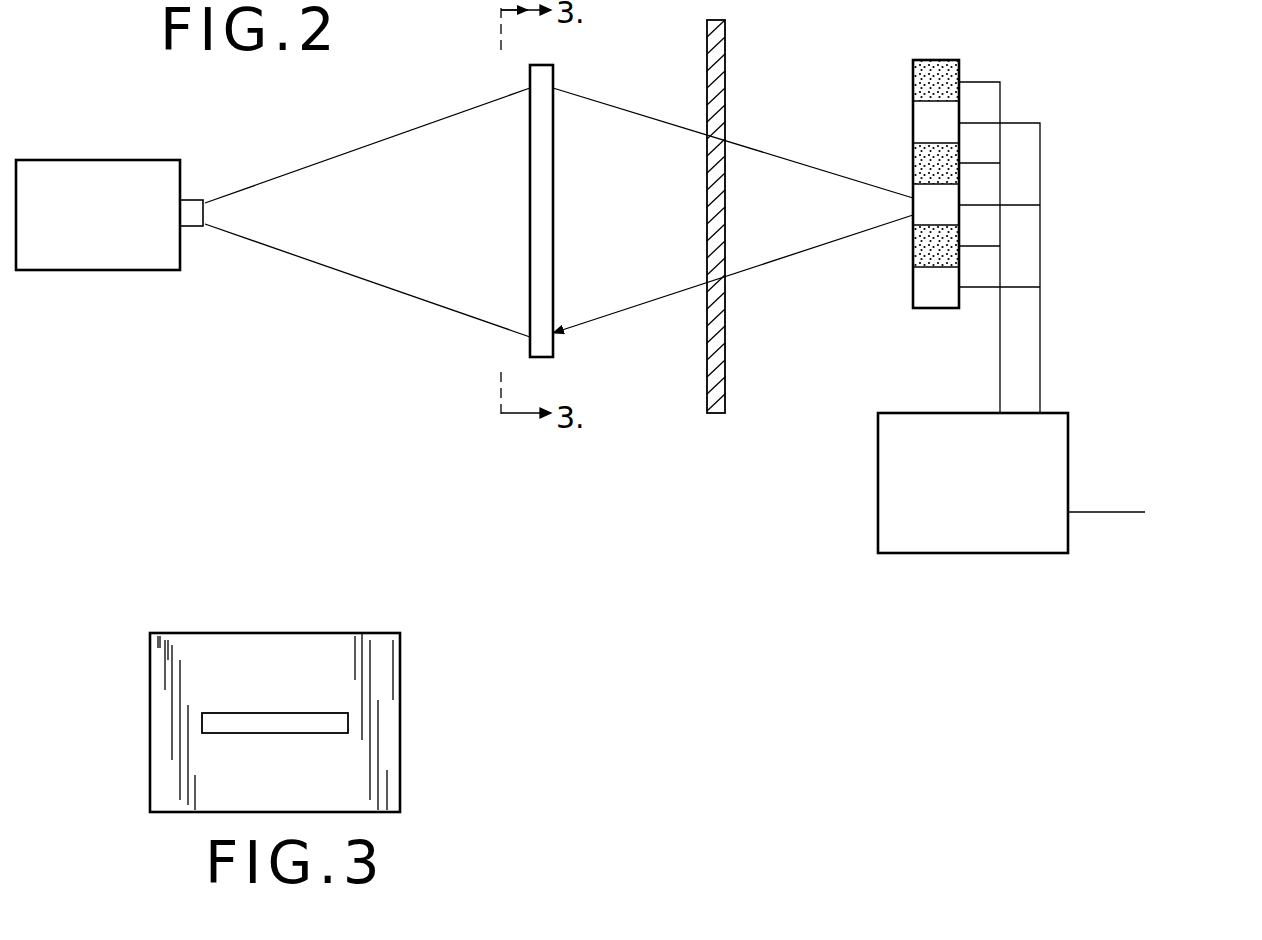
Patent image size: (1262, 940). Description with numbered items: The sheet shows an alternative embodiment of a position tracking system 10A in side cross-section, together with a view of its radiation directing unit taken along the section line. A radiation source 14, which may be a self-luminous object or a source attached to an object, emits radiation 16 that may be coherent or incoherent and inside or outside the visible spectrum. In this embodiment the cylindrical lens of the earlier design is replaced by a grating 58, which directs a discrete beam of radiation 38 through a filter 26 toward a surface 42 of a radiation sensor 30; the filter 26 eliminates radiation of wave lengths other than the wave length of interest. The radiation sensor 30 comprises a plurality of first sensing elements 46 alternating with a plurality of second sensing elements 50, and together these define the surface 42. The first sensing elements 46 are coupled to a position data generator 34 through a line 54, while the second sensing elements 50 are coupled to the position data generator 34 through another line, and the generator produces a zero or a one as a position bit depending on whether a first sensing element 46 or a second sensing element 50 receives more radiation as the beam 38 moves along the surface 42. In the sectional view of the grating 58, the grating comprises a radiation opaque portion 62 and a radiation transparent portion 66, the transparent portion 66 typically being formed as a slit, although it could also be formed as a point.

In FIG. 2, the position tracking system 10A is at (724, 416).
In FIG. 2, the radiation source 14 is at (103, 170).
In FIG. 2, the radiation 16 is at (368, 268).
In FIG. 2, the filter 26 is at (725, 45).
In FIG. 2, the radiation sensor 30 is at (904, 110).
In FIG. 2, the position data generator 34 is at (878, 460).
In FIG. 2, the discrete beam of radiation 38 is at (647, 118).
In FIG. 2, the surface 42 is at (907, 80).
In FIG. 2, the first sensing elements 46 is at (960, 75).
In FIG. 2, the second sensing elements 50 is at (913, 190).
In FIG. 2, the line 54 is at (998, 355).
In FIG. 2, the grating 58 is at (553, 347).
In FIG. 3, the grating 58 is at (326, 633).
In FIG. 3, the radiation opaque portion 62 is at (167, 633).
In FIG. 3, the radiation transparent portion 66 is at (348, 722).